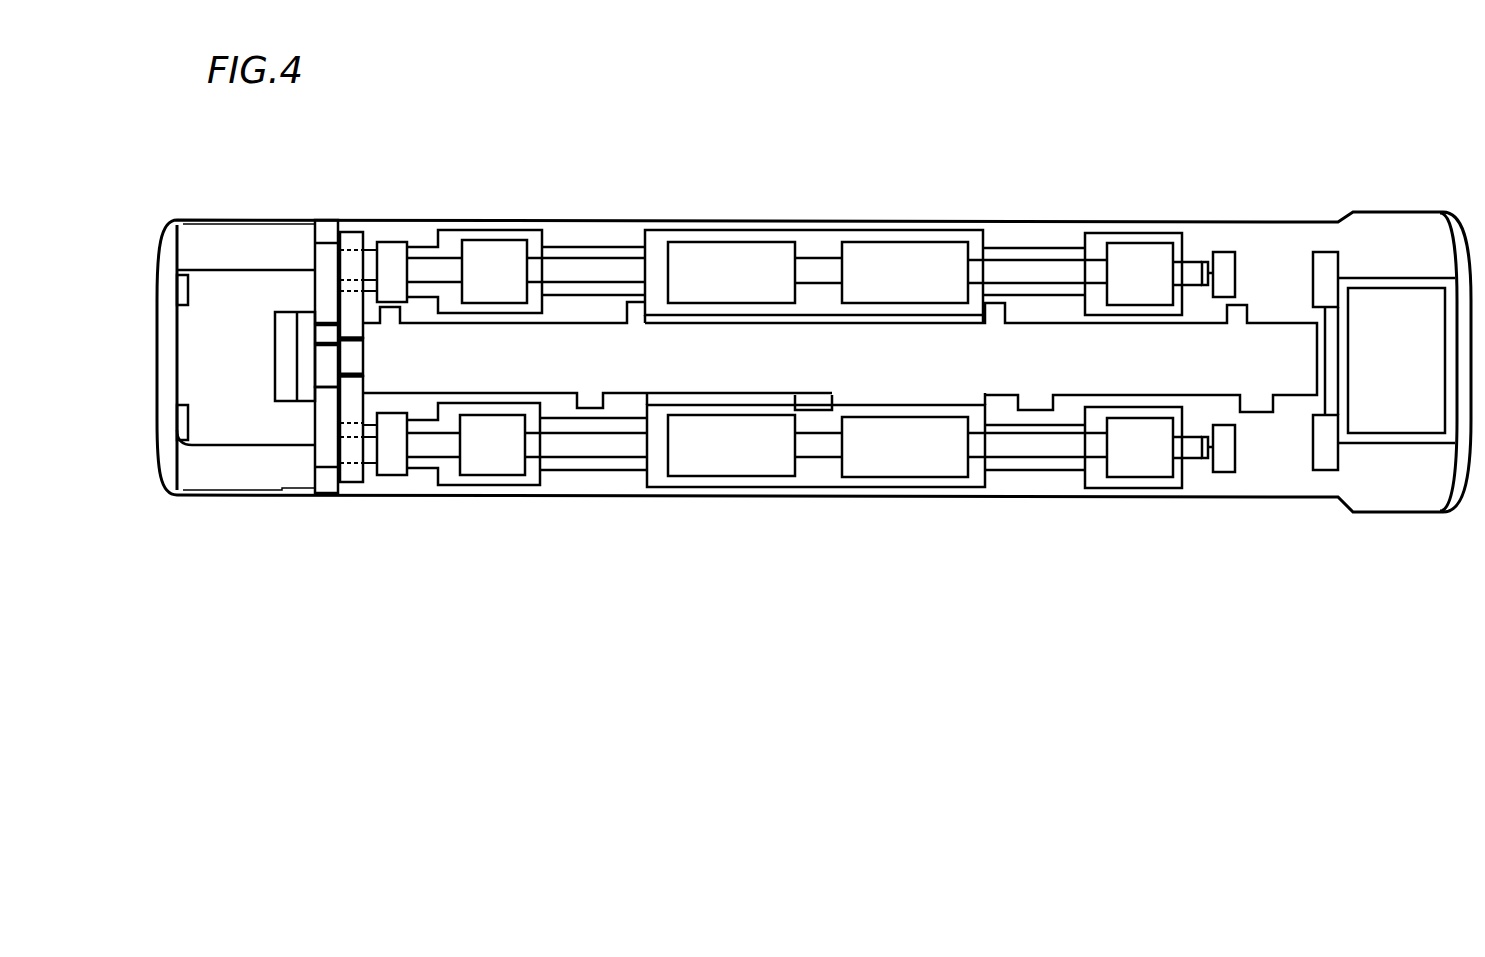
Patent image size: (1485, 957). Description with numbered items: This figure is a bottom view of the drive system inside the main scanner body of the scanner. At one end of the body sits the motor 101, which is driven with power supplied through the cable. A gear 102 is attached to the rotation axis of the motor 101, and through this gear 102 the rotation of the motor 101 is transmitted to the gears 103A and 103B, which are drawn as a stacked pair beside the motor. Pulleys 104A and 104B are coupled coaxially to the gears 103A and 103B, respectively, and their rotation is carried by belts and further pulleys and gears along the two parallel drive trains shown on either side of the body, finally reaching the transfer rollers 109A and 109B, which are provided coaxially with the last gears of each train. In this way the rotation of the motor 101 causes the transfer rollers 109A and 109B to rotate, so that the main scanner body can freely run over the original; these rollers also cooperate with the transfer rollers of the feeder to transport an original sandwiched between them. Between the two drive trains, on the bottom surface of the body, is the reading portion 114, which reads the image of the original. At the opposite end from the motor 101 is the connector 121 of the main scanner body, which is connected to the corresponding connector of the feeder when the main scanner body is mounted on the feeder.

The motor 101 is at (287, 333).
The gear 102 is at (350, 357).
The gear 103A is at (350, 315).
The gear 103B is at (350, 400).
The pulley 104A is at (326, 257).
The pulley 104B is at (323, 455).
The transfer roller 109A is at (495, 257).
The transfer roller 109B is at (493, 458).
The reading portion 114 is at (997, 362).
The connector 121 is at (1397, 363).